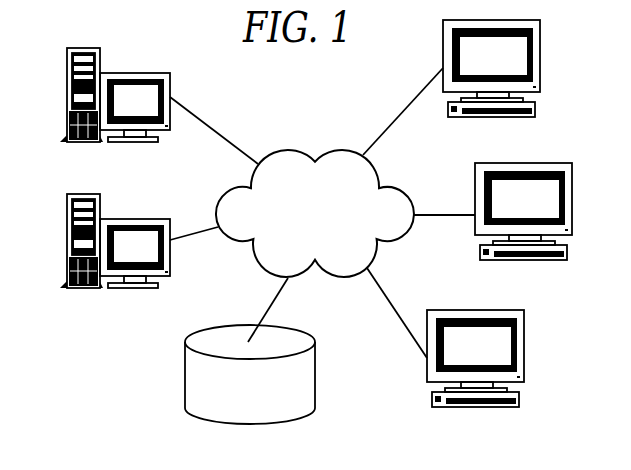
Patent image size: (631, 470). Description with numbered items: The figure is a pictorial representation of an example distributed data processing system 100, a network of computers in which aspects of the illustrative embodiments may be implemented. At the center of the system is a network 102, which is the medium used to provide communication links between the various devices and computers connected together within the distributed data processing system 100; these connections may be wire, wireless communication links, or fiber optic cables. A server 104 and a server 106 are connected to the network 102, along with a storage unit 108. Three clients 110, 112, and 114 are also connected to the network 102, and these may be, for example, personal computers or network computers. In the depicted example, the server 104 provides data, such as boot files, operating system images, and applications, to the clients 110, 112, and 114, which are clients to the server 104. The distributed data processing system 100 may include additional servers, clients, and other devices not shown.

The distributed data processing system 100 is at (143, 356).
The network 102 is at (285, 150).
The server 104 is at (137, 73).
The server 106 is at (137, 219).
The storage unit 108 is at (315, 365).
The client 110 is at (540, 60).
The client 112 is at (573, 203).
The client 114 is at (525, 350).